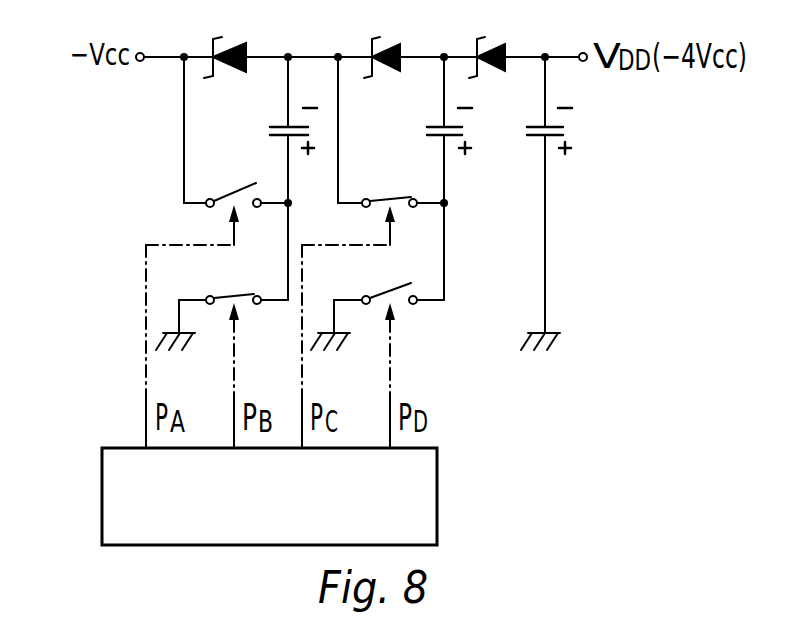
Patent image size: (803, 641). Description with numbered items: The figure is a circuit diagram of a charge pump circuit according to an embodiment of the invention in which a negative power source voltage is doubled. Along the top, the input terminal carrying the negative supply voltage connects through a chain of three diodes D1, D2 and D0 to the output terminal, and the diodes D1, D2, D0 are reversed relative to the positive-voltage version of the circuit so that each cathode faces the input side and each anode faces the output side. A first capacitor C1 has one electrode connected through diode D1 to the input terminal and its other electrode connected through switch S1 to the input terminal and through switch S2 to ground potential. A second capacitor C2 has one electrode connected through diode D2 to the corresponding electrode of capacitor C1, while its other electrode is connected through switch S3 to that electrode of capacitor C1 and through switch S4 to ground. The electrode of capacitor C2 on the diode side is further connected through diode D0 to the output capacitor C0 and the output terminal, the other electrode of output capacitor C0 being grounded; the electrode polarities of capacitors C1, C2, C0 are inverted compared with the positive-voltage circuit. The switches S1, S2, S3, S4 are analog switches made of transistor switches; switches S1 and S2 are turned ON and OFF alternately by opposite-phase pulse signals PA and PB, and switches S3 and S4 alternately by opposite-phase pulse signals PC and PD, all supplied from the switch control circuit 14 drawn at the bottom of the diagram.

The switch control circuit 14 is at (412, 523).
The diode D1 is at (225, 39).
The diode D2 is at (385, 39).
The diode D0 is at (490, 39).
The first capacitor C1 is at (277, 131).
The capacitor C2 is at (432, 131).
The output capacitor C0 is at (532, 131).
The switch S1 is at (236, 176).
The switch S2 is at (233, 293).
The switch S3 is at (391, 185).
The switch S4 is at (389, 291).